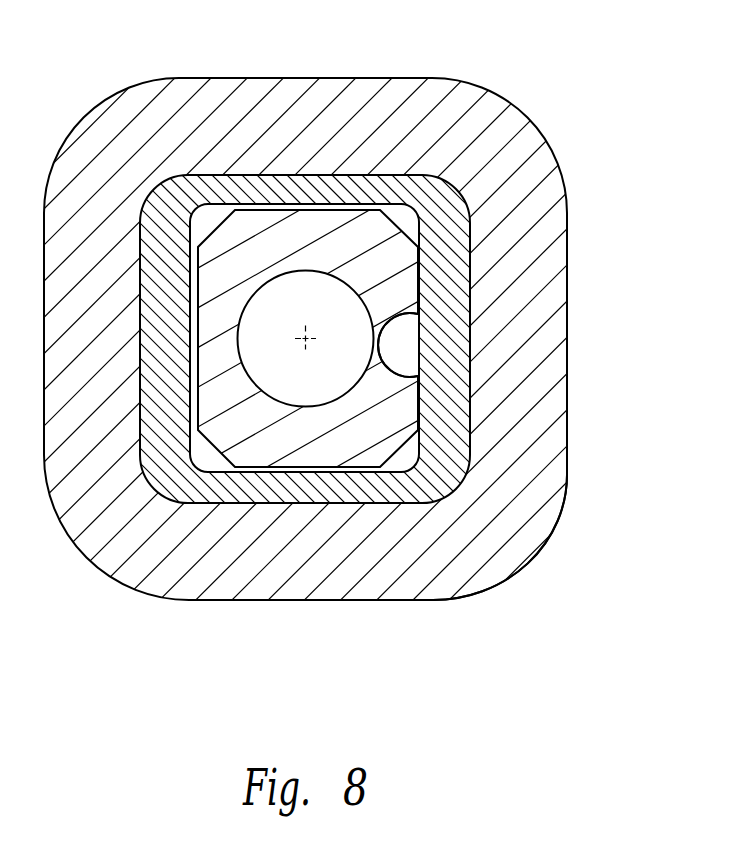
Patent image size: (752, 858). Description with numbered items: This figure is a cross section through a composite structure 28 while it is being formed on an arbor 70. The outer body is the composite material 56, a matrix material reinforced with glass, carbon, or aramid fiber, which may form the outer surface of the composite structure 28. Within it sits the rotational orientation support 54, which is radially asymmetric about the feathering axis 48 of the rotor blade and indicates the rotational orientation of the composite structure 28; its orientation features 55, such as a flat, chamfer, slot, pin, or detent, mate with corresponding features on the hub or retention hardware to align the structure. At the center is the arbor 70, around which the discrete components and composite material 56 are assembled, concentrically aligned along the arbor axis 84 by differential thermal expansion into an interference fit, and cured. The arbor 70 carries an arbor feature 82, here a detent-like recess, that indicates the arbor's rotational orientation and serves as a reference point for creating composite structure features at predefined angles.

The composite structure 28 is at (527, 570).
The feathering axis 48 is at (296, 335).
The rotational orientation support 54 is at (470, 197).
The orientation features 55 is at (423, 277).
The composite material 56 is at (568, 474).
The arbor 70 is at (218, 460).
The arbor feature 82 is at (417, 380).
The arbor axis 84 is at (303, 330).